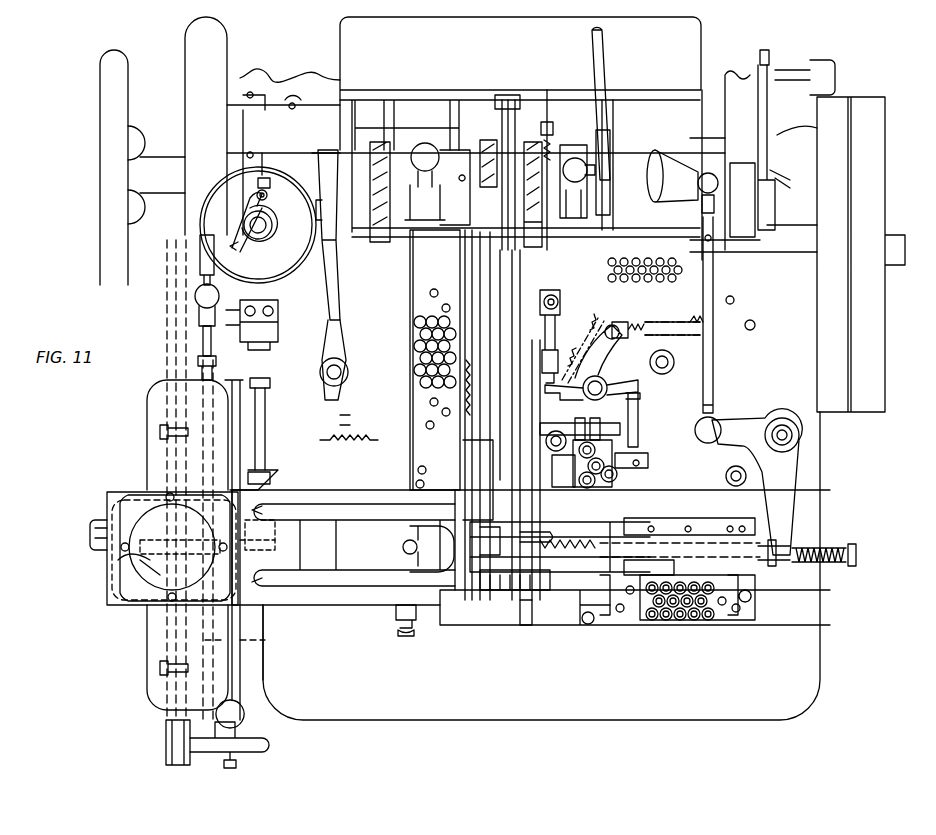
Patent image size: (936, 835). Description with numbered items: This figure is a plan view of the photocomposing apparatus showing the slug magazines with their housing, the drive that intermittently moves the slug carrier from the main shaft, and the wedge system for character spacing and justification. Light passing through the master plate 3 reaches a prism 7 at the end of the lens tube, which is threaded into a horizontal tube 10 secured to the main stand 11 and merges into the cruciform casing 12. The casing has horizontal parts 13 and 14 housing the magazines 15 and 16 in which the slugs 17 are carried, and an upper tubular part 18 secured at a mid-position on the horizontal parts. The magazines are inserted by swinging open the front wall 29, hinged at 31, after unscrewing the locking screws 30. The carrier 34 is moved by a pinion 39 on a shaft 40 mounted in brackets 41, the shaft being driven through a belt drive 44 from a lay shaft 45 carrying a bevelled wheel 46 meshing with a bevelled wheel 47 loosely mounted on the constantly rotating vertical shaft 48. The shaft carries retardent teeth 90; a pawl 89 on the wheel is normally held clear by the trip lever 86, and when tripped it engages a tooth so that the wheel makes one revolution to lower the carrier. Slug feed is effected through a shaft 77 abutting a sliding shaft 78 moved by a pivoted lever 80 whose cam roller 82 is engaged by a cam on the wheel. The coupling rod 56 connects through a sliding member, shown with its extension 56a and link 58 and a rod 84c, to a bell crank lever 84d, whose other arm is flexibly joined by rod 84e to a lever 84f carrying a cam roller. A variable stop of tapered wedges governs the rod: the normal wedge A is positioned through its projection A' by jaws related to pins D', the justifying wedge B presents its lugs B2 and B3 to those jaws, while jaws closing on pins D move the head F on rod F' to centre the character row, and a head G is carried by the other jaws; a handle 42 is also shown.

The master plate 3 is at (514, 602).
The prism 7 is at (402, 547).
The horizontally disposed tube 10 is at (290, 560).
The main stand 11 is at (355, 612).
The casing 12 is at (266, 490).
The horizontally disposed part 13 is at (152, 404).
The horizontally disposed part 14 is at (152, 643).
The magazine 15 is at (170, 314).
The magazine 16 is at (166, 744).
The slug 17 is at (176, 540).
The upper vertically extending tubular part 18 is at (142, 600).
The front wall 29 is at (126, 500).
The locking screw 30 is at (162, 430).
The hinge 31 is at (108, 520).
The carrier 34 is at (120, 570).
The pinion 39 is at (272, 544).
The shaft 40 is at (240, 455).
The bracket 41 is at (268, 406).
The handle 42 is at (266, 748).
The belt drive 44 is at (248, 370).
The lay shaft 45 is at (268, 430).
The bevelled toothed wheel 46 is at (196, 292).
The bevelled toothed wheel 47 is at (200, 222).
The vertical shaft 48 is at (258, 239).
The coupling rod 56 is at (322, 512).
The arm extension 56a is at (528, 575).
The link 58 is at (246, 639).
The shaft 77 is at (198, 367).
The shaft 78 is at (202, 350).
The pivoted lever 80 is at (204, 268).
The cam roller 82 is at (345, 263).
The rod 84c is at (776, 572).
The bell crank lever 84d is at (786, 476).
The rod 84e is at (714, 367).
The lever 84f is at (668, 195).
The latch or trip lever 86 is at (345, 281).
The pawl 89 is at (240, 236).
The retardent teeth 90 is at (272, 233).
The normal wedge A is at (483, 387).
The projection A' is at (487, 416).
The justifying wedge B is at (525, 408).
The lug B2 is at (542, 302).
The lug B3 is at (566, 350).
The air-operated pins D is at (685, 624).
The air-operated pins D' is at (416, 360).
The head F is at (746, 621).
The rod F' is at (613, 623).
The head G is at (464, 345).